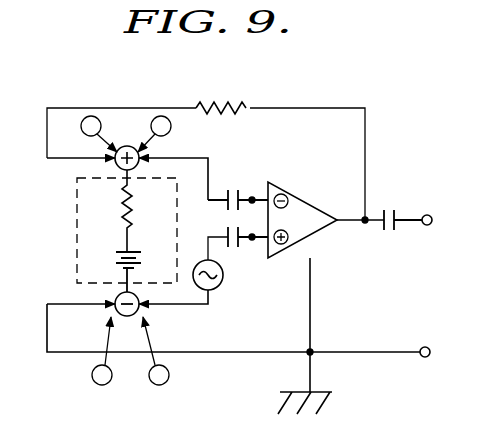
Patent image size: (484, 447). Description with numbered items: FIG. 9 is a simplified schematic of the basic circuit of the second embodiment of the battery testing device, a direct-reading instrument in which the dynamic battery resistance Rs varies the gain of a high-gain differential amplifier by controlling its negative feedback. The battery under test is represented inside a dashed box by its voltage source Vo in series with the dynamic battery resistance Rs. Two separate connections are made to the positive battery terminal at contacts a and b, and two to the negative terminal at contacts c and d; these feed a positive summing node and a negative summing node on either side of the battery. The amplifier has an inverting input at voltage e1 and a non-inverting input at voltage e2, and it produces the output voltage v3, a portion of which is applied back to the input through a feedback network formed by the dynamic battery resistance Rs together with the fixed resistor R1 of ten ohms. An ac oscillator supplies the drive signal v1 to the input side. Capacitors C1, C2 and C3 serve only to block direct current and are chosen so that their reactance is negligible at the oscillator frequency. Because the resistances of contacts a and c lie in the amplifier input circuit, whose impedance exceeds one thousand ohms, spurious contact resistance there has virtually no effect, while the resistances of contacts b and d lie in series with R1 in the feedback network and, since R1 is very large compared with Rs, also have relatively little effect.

The connection to positive battery terminal a is at (154, 134).
The connection to positive battery terminal b is at (99, 134).
The connection to negative battery terminal c is at (156, 351).
The connection to negative battery terminal d is at (102, 351).
The fixed resistor R1 is at (221, 100).
The dynamic battery resistance Rs is at (113, 211).
The battery voltage source Vo is at (114, 261).
The capacitor C1 is at (238, 189).
The capacitor C2 is at (247, 249).
The capacitor C3 is at (403, 211).
The inverting input voltage e1 is at (256, 192).
The non-inverting input voltage e2 is at (256, 247).
The ac oscillator voltage v1 is at (221, 289).
The output voltage v3 is at (427, 266).